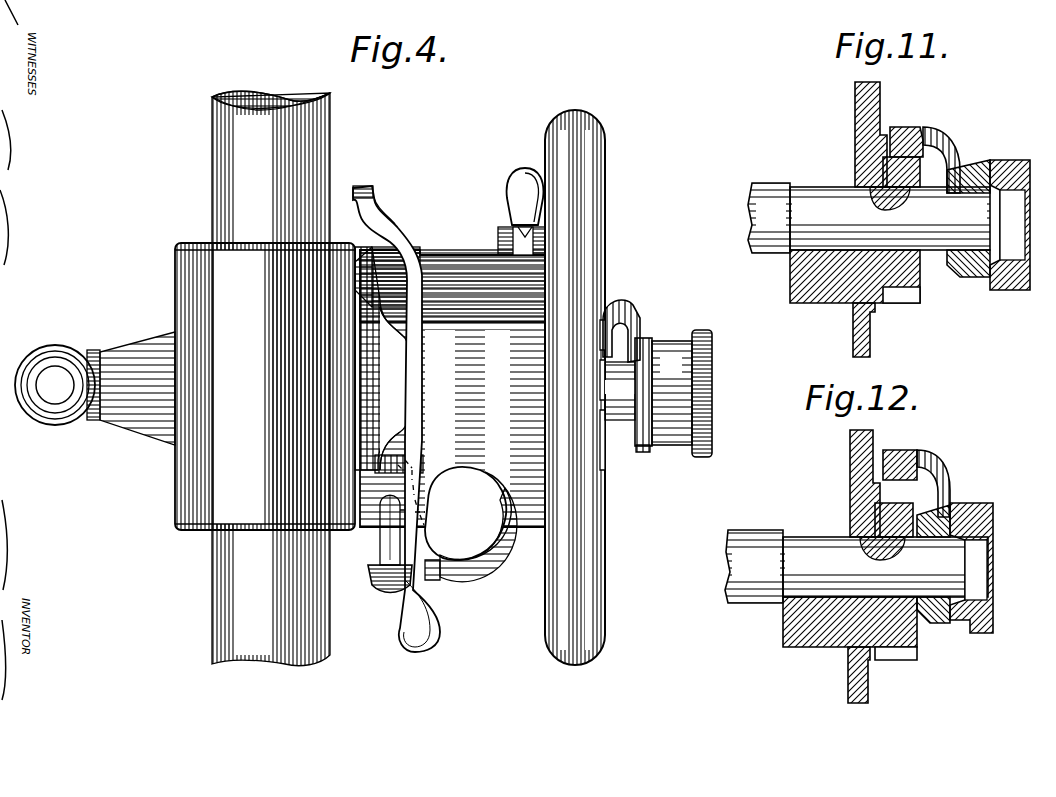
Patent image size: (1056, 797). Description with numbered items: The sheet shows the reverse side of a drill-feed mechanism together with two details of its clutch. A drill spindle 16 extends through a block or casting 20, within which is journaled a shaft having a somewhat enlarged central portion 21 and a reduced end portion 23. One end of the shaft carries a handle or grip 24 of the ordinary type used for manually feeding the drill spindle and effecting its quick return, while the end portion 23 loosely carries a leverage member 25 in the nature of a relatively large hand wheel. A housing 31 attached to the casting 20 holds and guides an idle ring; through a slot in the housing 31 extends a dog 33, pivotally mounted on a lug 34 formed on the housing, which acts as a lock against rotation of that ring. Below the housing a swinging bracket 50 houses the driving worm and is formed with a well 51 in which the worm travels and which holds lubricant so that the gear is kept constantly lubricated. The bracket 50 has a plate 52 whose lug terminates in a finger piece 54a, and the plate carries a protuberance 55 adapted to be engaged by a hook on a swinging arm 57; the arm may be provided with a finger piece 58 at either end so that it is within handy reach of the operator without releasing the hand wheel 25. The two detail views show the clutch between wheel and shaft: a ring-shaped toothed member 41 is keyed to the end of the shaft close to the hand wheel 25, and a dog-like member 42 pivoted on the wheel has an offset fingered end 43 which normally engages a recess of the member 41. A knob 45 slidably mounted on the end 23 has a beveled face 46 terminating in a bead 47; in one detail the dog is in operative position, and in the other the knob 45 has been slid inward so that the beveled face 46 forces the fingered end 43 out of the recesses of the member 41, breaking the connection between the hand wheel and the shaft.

In FIG. 4, the drill spindle 16 is at (212, 148).
In FIG. 4, the block or casting 20 is at (265, 386).
In FIG. 4, the handle or grip 24 is at (58, 372).
In FIG. 4, the housing 31 is at (452, 388).
In FIG. 4, the dog 33 is at (503, 226).
In FIG. 4, the lug 34 is at (498, 236).
In FIG. 4, the swinging arm 57 is at (415, 352).
In FIG. 4, the finger piece 58 is at (370, 197).
In FIG. 4, the plate 52 is at (385, 542).
In FIG. 4, the finger piece 54a is at (375, 588).
In FIG. 4, the protuberance 55 is at (432, 527).
In FIG. 4, the swinging bracket 50 is at (482, 560).
In FIG. 4, the well 51 is at (487, 580).
In FIG. 4, the leverage member 25 is at (605, 600).
In FIG. 11, the leverage member 25 is at (855, 114).
In FIG. 12, the leverage member 25 is at (852, 460).
In FIG. 4, the ring-shaped toothed member 41 is at (603, 468).
In FIG. 11, the ring-shaped toothed member 41 is at (908, 295).
In FIG. 4, the reduced end portion 23 is at (625, 385).
In FIG. 11, the reduced end portion 23 is at (890, 218).
In FIG. 12, the reduced end portion 23 is at (885, 567).
In FIG. 4, the offset fingered end 43 is at (624, 308).
In FIG. 11, the offset fingered end 43 is at (948, 135).
In FIG. 12, the offset fingered end 43 is at (945, 485).
In FIG. 4, the bead 47 is at (648, 340).
In FIG. 11, the bead 47 is at (965, 170).
In FIG. 12, the bead 47 is at (948, 520).
In FIG. 4, the knob 45 is at (680, 378).
In FIG. 11, the knob 45 is at (1000, 165).
In FIG. 12, the knob 45 is at (960, 623).
In FIG. 4, the beveled face 46 is at (640, 445).
In FIG. 11, the beveled face 46 is at (955, 277).
In FIG. 12, the beveled face 46 is at (925, 617).
In FIG. 11, the enlarged central portion 21 is at (752, 200).
In FIG. 12, the enlarged central portion 21 is at (730, 552).
In FIG. 11, the dog-like member 42 is at (905, 127).
In FIG. 12, the dog-like member 42 is at (900, 450).